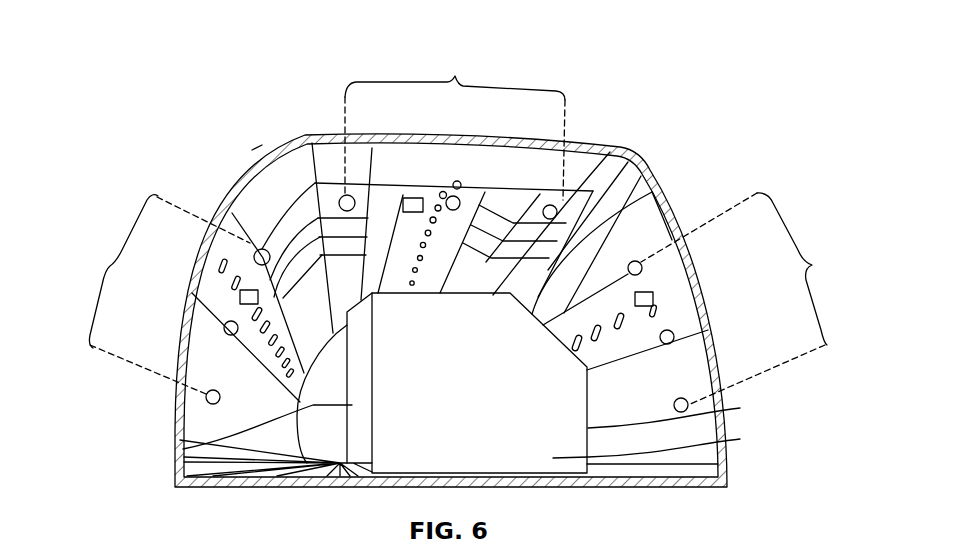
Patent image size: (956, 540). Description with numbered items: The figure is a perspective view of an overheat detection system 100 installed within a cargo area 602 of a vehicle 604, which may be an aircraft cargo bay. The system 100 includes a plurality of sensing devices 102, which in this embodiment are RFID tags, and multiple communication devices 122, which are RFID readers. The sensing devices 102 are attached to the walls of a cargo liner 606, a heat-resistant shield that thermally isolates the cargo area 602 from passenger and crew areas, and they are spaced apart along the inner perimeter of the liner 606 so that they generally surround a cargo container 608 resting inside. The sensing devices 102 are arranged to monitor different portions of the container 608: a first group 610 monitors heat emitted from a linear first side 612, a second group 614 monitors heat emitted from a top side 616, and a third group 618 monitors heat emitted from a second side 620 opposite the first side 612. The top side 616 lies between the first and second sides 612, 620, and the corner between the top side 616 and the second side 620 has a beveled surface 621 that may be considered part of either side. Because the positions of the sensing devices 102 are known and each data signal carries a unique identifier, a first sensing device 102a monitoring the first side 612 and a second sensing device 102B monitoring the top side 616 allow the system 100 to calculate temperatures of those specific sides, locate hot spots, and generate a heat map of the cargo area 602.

The overheat detection system 100 is at (648, 220).
The sensing devices 102 is at (350, 194).
The first sensing device 102a is at (206, 392).
The second sensing device 102B is at (460, 197).
The communication devices 122 is at (416, 198).
The cargo area 602 is at (268, 203).
The vehicle 604 is at (419, 75).
The cargo liner 606 is at (272, 160).
The cargo container 608 is at (740, 439).
The first group 610 is at (110, 266).
The first side 612 is at (183, 449).
The second group 614 is at (455, 76).
The top side 616 is at (585, 198).
The third group 618 is at (810, 265).
The second side 620 is at (740, 408).
The beveled surface 621 is at (651, 191).